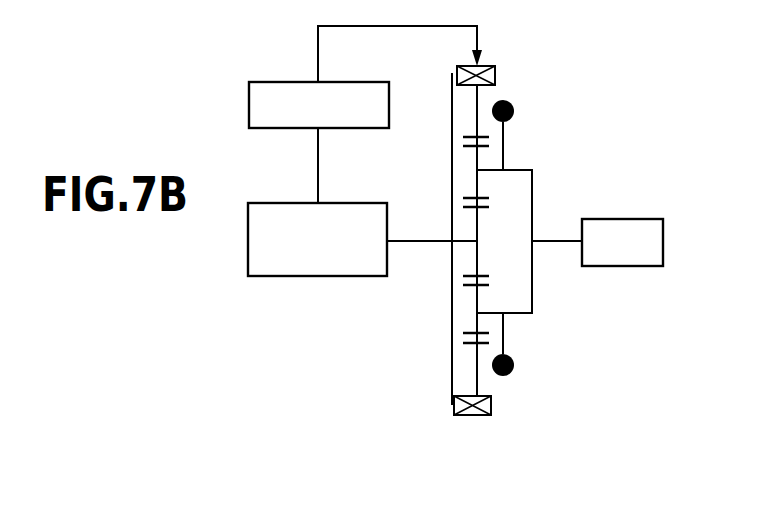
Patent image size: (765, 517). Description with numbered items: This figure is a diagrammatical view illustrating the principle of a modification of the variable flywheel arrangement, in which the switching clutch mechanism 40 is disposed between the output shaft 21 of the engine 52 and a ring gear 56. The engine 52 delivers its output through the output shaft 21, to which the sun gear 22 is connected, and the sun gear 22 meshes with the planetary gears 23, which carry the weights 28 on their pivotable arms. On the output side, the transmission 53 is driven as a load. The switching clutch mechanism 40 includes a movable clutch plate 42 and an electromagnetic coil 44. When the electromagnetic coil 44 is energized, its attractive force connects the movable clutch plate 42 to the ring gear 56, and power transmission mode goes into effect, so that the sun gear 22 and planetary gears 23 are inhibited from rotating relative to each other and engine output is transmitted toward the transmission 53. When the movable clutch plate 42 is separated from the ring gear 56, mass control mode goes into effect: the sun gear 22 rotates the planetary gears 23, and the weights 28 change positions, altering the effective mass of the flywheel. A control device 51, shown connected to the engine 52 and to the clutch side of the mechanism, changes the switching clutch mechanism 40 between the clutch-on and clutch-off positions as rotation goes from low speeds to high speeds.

The control device 51 is at (270, 80).
The engine 52 is at (280, 277).
The transmission 53 is at (618, 267).
The output shaft 21 is at (420, 242).
The electromagnetic coil 44 is at (484, 65).
The ring gear 56 is at (477, 96).
The movable clutch plate 42 is at (452, 316).
The switching clutch mechanism 40 is at (428, 421).
The weights 28 is at (513, 103).
The planetary gears 23 is at (477, 185).
The sun gear 22 is at (477, 258).